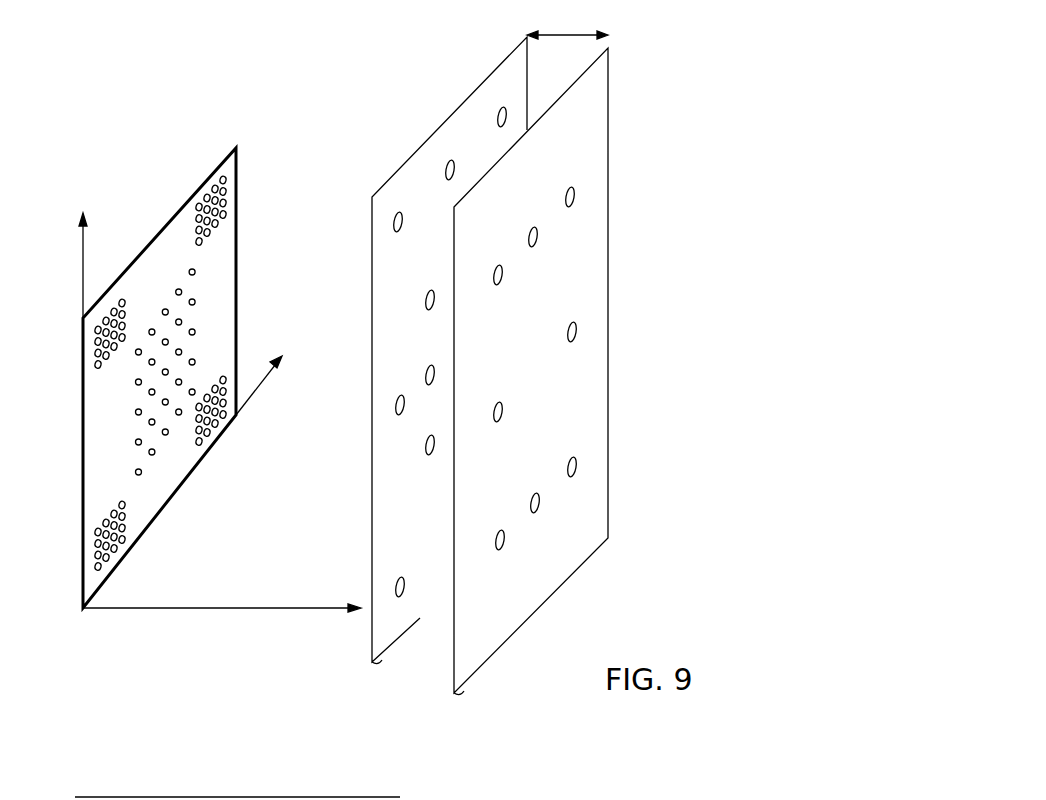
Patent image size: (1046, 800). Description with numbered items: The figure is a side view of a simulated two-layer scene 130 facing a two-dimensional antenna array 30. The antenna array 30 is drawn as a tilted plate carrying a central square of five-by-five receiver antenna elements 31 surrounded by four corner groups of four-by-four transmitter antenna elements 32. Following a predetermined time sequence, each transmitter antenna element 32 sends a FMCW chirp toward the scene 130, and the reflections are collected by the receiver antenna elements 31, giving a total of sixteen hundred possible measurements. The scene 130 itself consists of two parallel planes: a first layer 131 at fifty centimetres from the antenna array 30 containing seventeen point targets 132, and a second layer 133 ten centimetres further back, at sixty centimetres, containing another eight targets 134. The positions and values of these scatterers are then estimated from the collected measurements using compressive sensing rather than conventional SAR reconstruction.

The 2D antenna array 30 is at (238, 200).
The receiver antenna elements 31 is at (189, 270).
The transmitter antenna elements 32 is at (198, 201).
The scene 130 is at (650, 50).
The first layer 131 is at (372, 666).
The point targets 132 is at (404, 583).
The second layer 133 is at (452, 697).
The targets 134 is at (577, 467).